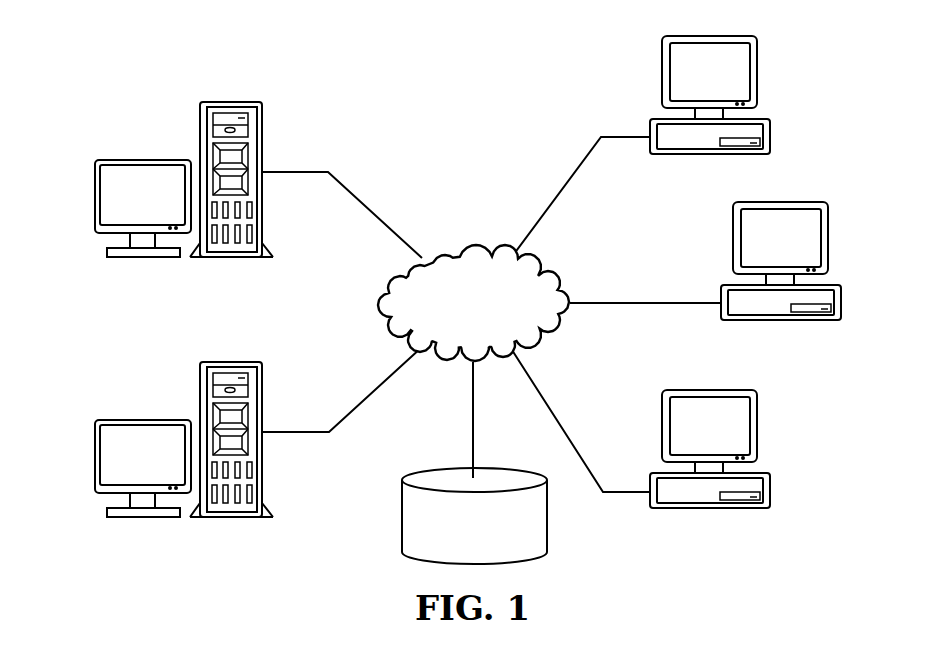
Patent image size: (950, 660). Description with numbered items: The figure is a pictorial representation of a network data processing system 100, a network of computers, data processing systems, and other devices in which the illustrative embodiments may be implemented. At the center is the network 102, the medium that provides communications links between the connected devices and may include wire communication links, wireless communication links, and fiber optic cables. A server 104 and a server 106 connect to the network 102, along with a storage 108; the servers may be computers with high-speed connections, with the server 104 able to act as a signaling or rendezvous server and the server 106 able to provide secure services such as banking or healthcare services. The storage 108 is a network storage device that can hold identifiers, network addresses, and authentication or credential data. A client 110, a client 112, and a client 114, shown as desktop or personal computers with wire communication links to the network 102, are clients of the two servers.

The network data processing system 100 is at (333, 74).
The network 102 is at (447, 248).
The server 104 is at (95, 197).
The server 106 is at (95, 455).
The storage 108 is at (402, 512).
The client 110 is at (770, 128).
The client 112 is at (841, 308).
The client 114 is at (770, 498).